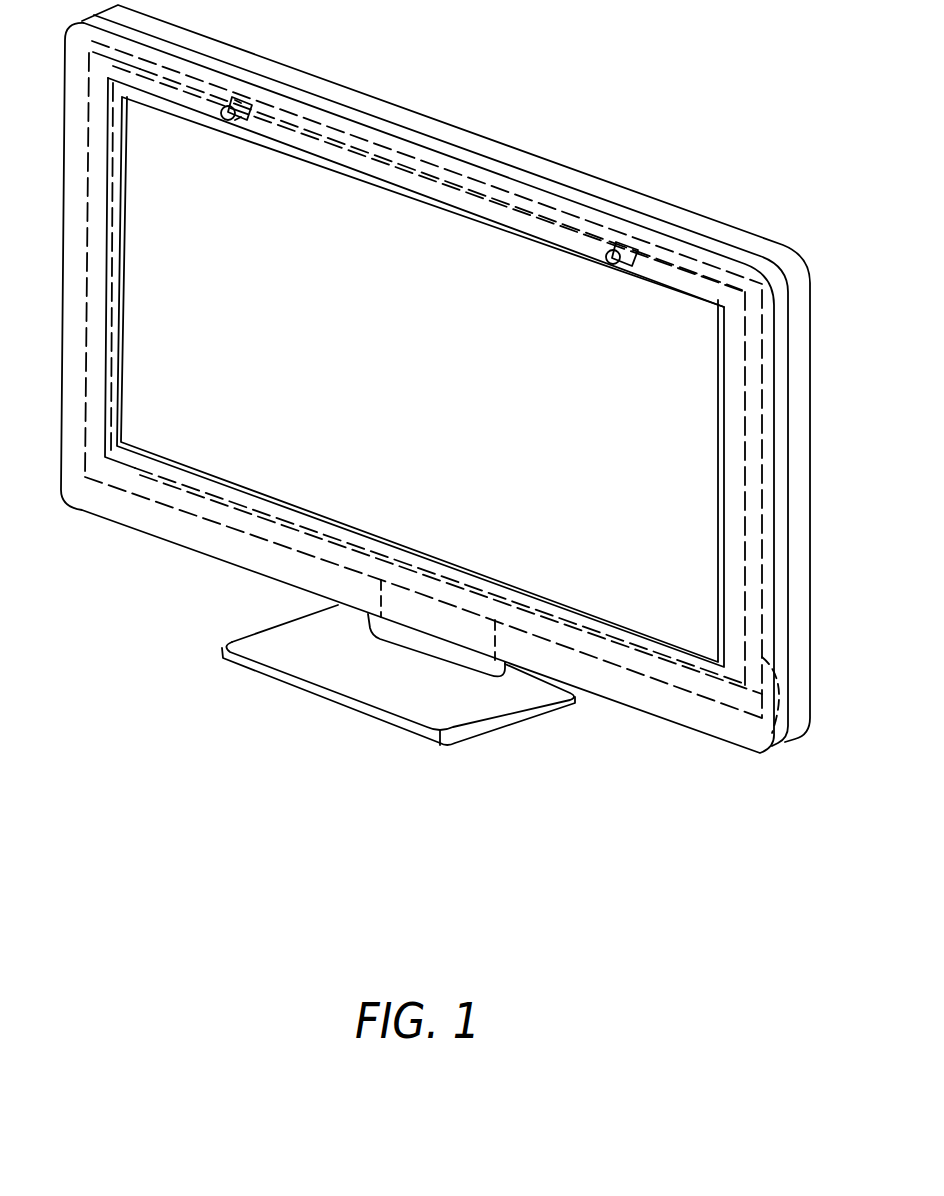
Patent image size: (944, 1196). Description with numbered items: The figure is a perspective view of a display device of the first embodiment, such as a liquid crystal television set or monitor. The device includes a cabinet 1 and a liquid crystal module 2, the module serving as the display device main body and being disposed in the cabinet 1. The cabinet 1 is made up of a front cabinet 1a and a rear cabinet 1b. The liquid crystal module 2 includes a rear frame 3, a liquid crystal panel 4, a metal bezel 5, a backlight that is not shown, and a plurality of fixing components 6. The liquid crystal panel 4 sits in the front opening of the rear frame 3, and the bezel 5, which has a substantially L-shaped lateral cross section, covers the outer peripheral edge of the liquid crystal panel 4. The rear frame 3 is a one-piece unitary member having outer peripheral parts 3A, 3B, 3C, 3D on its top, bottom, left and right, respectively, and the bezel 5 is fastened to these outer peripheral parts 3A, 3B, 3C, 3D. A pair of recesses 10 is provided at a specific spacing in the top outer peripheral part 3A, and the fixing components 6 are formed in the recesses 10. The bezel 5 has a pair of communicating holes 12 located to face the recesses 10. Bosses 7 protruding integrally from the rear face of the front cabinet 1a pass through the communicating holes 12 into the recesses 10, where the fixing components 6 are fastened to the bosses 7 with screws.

The cabinet 1 is at (345, 47).
The front cabinet 1a is at (358, 120).
The rear cabinet 1b is at (440, 133).
The liquid crystal module 2 is at (568, 204).
The rear frame 3 is at (503, 186).
The top outer peripheral part 3A is at (530, 200).
The bottom outer peripheral part 3B is at (287, 545).
The left outer peripheral part 3C is at (82, 414).
The right outer peripheral part 3D is at (774, 750).
The liquid crystal panel 4 is at (418, 365).
The bezel 5 is at (430, 183).
The fixing component 6 is at (243, 103).
The boss 7 is at (222, 120).
The recess 10 is at (228, 98).
The communicating hole 12 is at (237, 126).